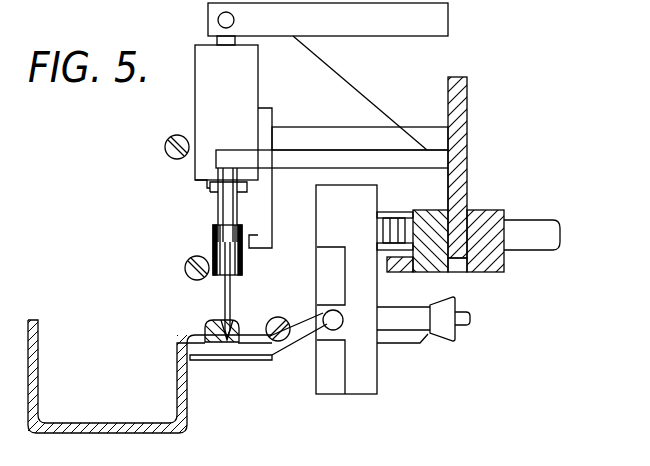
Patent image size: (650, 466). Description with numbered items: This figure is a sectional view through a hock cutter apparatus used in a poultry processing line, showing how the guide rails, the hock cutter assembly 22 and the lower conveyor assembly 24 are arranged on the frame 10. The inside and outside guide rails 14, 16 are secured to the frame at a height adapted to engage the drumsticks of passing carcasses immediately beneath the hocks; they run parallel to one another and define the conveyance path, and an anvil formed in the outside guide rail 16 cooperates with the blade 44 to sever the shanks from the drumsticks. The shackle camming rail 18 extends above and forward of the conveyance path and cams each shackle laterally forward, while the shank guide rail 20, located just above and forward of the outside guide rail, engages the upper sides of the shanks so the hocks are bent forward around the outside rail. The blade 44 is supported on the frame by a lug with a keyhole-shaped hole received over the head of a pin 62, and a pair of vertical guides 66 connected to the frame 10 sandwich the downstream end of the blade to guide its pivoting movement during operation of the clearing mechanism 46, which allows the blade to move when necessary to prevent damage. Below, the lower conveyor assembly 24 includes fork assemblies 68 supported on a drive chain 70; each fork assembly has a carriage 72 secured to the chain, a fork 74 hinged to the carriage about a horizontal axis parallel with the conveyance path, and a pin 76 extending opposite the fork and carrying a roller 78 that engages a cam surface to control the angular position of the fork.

The frame 10 is at (468, 108).
The inside guide rail 14 is at (274, 316).
The outside guide rail 16 is at (210, 324).
The shackle camming rail 18 is at (170, 141).
The shank guide rail 20 is at (186, 270).
The hock cutter assembly 22 is at (145, 212).
The lower conveyor assembly 24 is at (343, 398).
The blade 44 is at (200, 303).
The clearing mechanism 46 is at (245, 86).
The pin 62 is at (338, 131).
The vertical guides 66 is at (240, 220).
The fork assemblies 68 is at (283, 366).
The drive chain 70 is at (382, 212).
The carriage 72 is at (368, 371).
The fork 74 is at (203, 362).
The pin 76 is at (395, 313).
The roller 78 is at (447, 334).